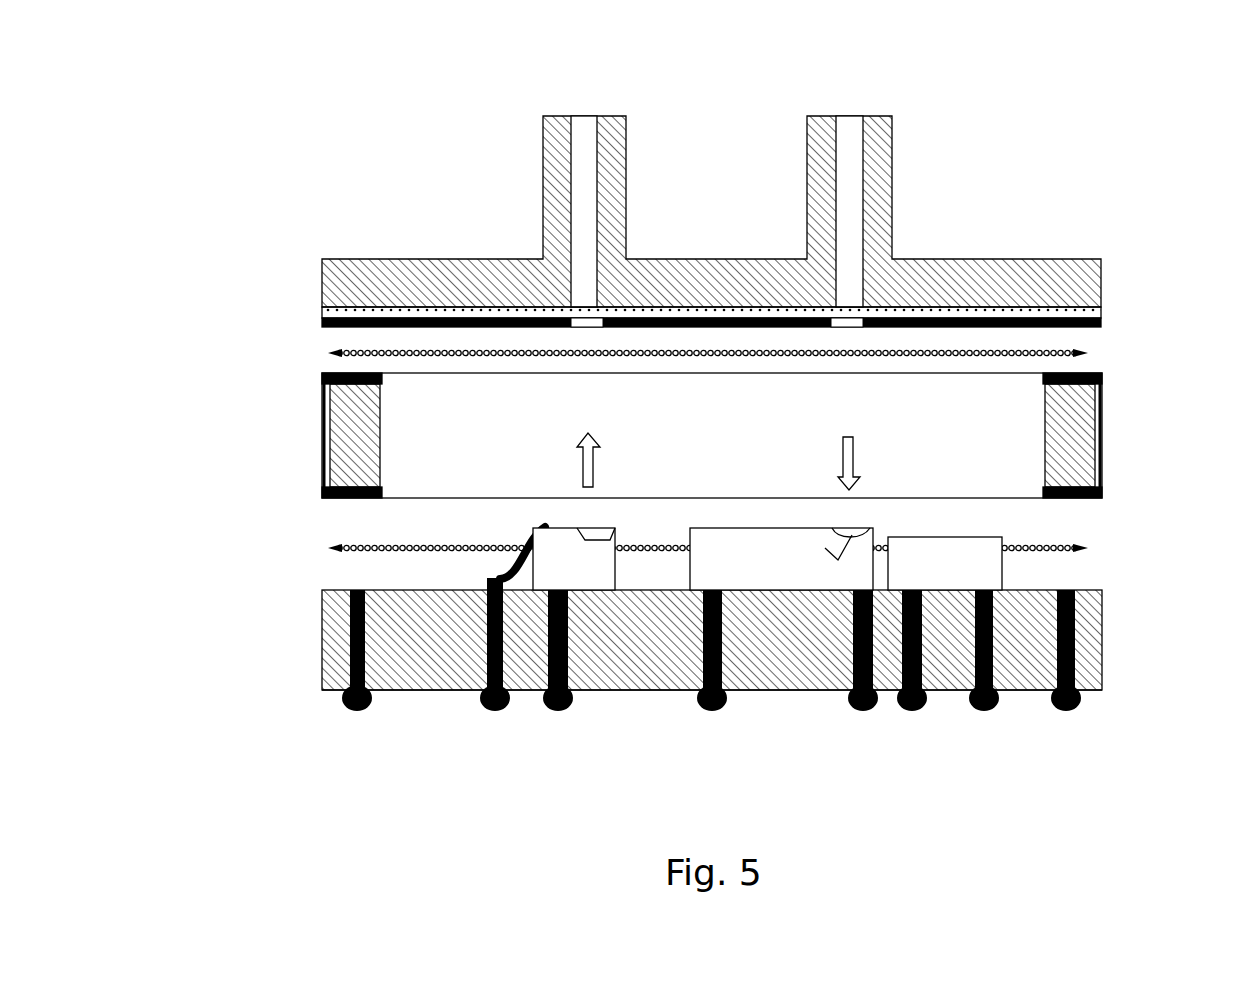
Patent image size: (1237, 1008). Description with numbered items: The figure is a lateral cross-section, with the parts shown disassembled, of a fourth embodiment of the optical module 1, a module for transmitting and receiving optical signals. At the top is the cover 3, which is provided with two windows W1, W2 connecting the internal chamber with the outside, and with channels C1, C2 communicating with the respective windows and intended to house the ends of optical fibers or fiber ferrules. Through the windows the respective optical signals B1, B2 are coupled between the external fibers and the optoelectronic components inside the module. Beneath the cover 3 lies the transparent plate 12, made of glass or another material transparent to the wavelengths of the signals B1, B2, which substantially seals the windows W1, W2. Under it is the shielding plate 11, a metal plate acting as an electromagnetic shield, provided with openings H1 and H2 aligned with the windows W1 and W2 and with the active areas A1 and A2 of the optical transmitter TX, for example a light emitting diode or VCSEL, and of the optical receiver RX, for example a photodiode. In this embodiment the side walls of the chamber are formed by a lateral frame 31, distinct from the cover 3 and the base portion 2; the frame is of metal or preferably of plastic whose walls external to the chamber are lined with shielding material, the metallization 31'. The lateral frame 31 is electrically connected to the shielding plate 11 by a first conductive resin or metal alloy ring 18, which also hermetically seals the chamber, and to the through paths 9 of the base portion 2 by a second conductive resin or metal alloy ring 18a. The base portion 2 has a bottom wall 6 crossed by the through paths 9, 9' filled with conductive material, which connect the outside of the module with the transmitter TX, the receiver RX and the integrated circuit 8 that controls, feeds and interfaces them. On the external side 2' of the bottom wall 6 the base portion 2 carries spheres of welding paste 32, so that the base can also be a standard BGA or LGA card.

The optical module 1 is at (232, 62).
The base portion 2 is at (703, 611).
The external side of the bottom wall 2' is at (757, 706).
The cover portion 3 is at (512, 210).
The bottom wall 6 is at (1085, 626).
The integrated circuit 8 is at (940, 548).
The through paths 9 is at (777, 634).
The via 9' is at (314, 569).
The shielding plate 11 is at (322, 323).
The transparent plate 12 is at (322, 311).
The first conductive resin or metal alloy ring 18 is at (1030, 347).
The second conductive resin or metal alloy ring 18a is at (1030, 543).
The lateral frame 31 is at (701, 435).
The metallization 31' is at (711, 445).
The spheres of welding paste 32 is at (352, 710).
The first channel C1 is at (583, 192).
The second channel C2 is at (850, 195).
The first window W1 is at (586, 300).
The second window W2 is at (850, 300).
The first opening H1 is at (598, 330).
The second opening H2 is at (862, 330).
The first optical signal B1 is at (583, 458).
The second optical signal B2 is at (845, 452).
The optical transmitter TX is at (612, 535).
The optical receiver RX is at (720, 555).
The active area of the optical transmitter A1 is at (585, 523).
The active area of the optical receiver A2 is at (781, 520).